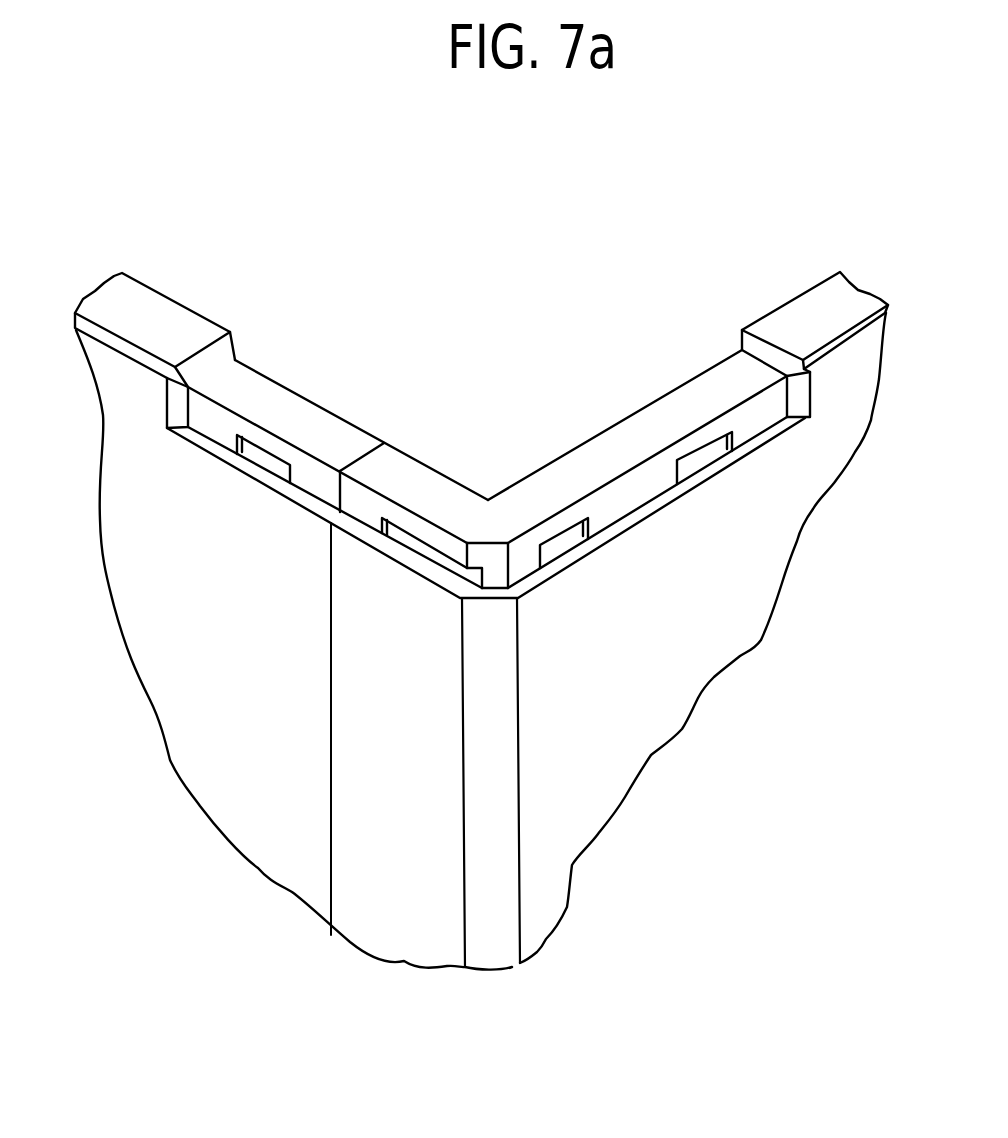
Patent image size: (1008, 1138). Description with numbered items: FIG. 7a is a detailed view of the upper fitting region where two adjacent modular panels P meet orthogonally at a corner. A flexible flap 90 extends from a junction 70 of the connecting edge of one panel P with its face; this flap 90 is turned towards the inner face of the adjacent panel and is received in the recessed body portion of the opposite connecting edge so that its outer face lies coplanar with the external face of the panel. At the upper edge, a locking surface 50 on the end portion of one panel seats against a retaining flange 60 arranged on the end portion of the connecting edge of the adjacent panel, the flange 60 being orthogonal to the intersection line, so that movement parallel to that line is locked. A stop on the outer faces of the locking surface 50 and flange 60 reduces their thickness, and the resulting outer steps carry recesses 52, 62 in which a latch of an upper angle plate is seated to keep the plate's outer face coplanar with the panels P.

The modular panel P is at (481, 621).
The locking surface 50 is at (307, 413).
The recess 52 is at (273, 462).
The retaining flange 60 is at (661, 413).
The recess 62 is at (702, 452).
The junction 70 is at (505, 731).
The flexible flap 90 is at (361, 669).